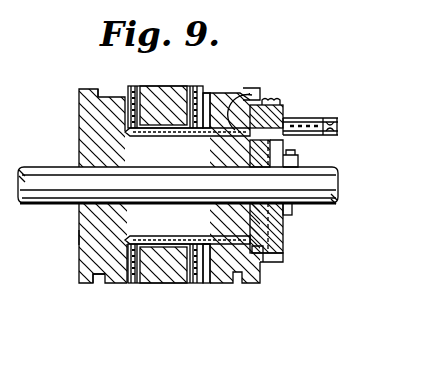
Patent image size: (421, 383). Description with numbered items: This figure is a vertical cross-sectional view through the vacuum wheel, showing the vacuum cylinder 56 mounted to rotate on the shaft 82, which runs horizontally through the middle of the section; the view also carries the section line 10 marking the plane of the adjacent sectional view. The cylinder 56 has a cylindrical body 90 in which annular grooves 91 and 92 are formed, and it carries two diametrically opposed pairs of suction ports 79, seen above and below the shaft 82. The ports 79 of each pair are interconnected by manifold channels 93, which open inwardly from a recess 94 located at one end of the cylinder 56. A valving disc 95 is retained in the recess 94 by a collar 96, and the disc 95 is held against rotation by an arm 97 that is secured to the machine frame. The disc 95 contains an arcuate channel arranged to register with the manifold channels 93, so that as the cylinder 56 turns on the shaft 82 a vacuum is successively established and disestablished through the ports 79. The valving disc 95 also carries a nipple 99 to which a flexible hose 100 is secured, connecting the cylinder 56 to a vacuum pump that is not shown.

The section line 10- 10 is at (245, 68).
The vacuum cylinder 56 is at (71, 127).
The suction ports 79 is at (203, 86).
The shaft 82 is at (338, 178).
The cylindrical body 90 is at (79, 237).
The annular groove 91 is at (100, 95).
The annular groove 92 is at (240, 92).
The manifold channels 93 is at (240, 125).
The recess 94 is at (265, 260).
The valving disc 95 is at (283, 243).
The collar 96 is at (292, 210).
The arm 97 is at (279, 105).
The nipple 99 is at (292, 140).
The flexible hose 100 is at (336, 120).